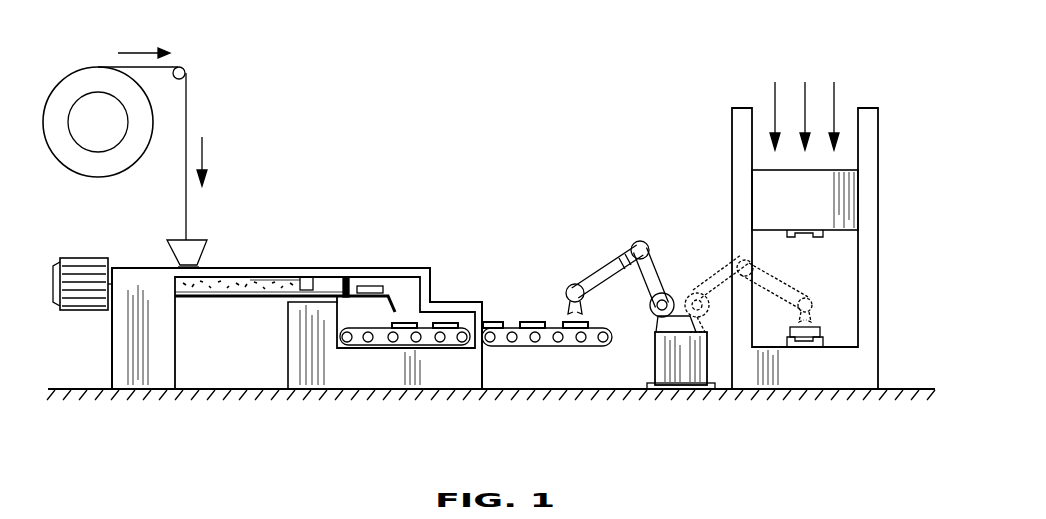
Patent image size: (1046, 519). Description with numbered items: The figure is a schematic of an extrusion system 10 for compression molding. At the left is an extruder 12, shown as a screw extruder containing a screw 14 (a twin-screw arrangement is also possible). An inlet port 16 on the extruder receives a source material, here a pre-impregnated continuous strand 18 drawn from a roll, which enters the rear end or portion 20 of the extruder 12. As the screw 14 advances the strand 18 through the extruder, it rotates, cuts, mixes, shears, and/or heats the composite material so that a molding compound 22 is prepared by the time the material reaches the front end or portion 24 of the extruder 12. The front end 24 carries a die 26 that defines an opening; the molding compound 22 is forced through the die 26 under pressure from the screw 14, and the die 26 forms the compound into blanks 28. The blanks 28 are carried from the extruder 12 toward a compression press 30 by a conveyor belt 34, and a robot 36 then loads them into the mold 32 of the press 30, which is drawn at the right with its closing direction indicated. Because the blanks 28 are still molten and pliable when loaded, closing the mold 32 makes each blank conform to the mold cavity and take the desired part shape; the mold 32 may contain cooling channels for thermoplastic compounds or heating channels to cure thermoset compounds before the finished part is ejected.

The extrusion system 10 is at (554, 71).
The extruder 12 is at (240, 280).
The screw 14 is at (270, 298).
The inlet port 16 is at (172, 258).
The pre-impregnated continuous strand 18 is at (188, 105).
The rear end or portion of the extruder 20 is at (200, 298).
The molding compound 22 is at (305, 280).
The front end or portion of the extruder 24 is at (350, 268).
The die 26 is at (348, 290).
The blanks 28 is at (530, 321).
The compression press 30 is at (880, 297).
The mold 32 is at (840, 228).
The conveyor belt 34 is at (565, 346).
The robot 36 is at (682, 350).